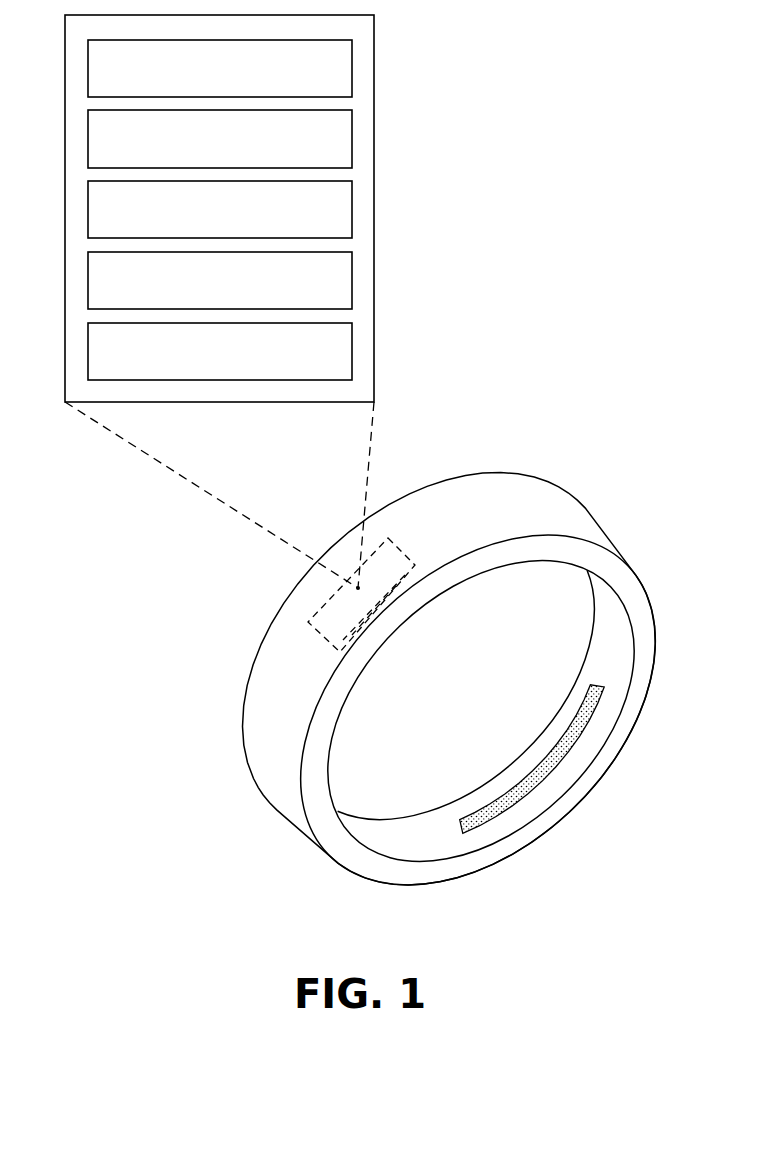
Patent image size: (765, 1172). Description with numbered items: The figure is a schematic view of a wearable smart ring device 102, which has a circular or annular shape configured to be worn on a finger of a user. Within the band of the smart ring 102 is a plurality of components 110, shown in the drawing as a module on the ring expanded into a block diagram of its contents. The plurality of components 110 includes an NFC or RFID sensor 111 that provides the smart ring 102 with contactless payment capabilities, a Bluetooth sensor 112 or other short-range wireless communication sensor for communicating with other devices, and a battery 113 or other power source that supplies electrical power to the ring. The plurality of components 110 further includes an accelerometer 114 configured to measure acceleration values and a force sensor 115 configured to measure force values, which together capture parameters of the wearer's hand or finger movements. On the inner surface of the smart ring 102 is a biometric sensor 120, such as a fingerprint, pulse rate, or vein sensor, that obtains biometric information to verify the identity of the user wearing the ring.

The wearable smart ring device 102 is at (247, 688).
The plurality of components 110 is at (327, 641).
The NFC or RFID sensor 111 is at (352, 71).
The Bluetooth sensor 112 is at (352, 131).
The battery 113 is at (352, 215).
The accelerometer 114 is at (352, 280).
The force sensor 115 is at (352, 355).
The biometric sensor 120 is at (537, 773).